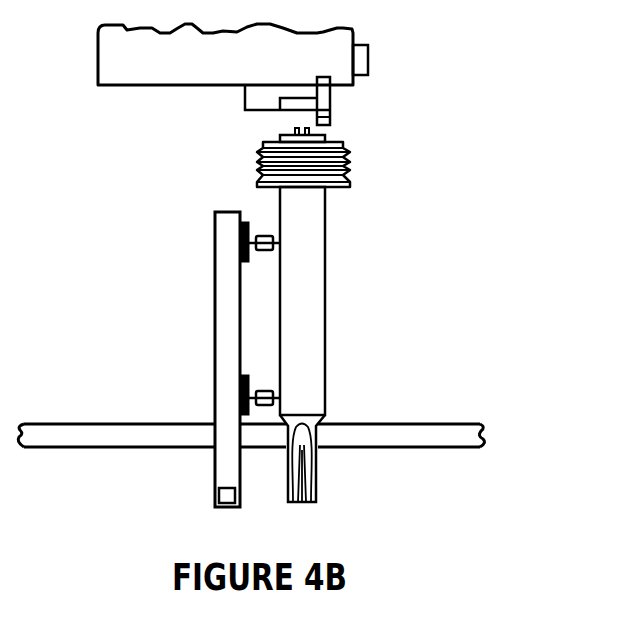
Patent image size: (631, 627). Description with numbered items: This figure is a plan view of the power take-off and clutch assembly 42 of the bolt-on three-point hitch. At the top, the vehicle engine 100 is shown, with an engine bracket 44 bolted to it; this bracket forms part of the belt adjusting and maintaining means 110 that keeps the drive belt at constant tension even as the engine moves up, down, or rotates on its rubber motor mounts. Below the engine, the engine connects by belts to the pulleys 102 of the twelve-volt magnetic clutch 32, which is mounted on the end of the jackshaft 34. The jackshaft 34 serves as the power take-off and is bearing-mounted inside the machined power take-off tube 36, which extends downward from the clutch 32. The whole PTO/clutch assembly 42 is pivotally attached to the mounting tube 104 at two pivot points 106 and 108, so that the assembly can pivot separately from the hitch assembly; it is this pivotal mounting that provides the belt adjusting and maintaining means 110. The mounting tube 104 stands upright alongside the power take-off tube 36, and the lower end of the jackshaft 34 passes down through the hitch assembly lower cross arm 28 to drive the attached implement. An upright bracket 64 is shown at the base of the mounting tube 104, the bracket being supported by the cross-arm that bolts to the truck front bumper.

The engine 100 is at (305, 75).
The engine bracket 44 is at (371, 64).
The belt adjusting and maintaining means 110 is at (333, 105).
The pulleys 102 is at (259, 170).
The magnetic clutch 32 is at (352, 176).
The power take-off tube 36 is at (305, 388).
The PTO/clutch assembly 42 is at (397, 273).
The lower cross arm 28 is at (434, 421).
The mounting tube 104 is at (222, 465).
The upright bracket 64 is at (238, 497).
The pivot point 106 is at (260, 265).
The pivot point 108 is at (264, 386).
The jackshaft 34 is at (320, 468).